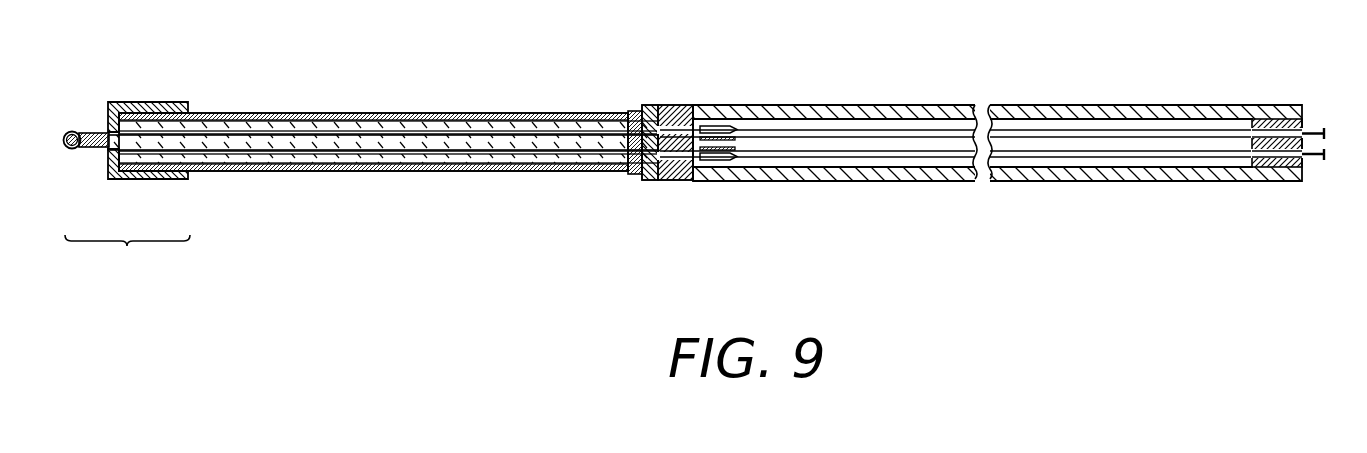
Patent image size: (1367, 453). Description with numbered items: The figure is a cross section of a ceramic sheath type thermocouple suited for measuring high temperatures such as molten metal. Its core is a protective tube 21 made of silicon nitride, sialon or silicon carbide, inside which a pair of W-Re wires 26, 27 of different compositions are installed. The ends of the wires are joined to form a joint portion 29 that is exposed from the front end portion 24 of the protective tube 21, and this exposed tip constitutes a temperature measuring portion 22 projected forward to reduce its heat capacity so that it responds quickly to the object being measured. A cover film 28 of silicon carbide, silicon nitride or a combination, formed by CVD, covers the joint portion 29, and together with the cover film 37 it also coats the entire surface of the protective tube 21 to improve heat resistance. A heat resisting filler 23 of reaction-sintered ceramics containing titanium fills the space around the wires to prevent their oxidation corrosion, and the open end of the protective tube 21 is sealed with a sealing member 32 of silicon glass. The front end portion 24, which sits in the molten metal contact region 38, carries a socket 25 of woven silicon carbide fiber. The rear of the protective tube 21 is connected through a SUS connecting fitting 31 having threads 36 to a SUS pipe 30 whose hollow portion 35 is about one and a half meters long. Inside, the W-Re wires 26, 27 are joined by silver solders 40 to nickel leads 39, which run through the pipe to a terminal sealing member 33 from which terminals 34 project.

The protective tube 21 is at (361, 116).
The temperature measuring portion 22 is at (96, 120).
The heat resisting filler 23 is at (410, 136).
The front end portion 24 is at (157, 180).
The socket 25 is at (157, 104).
The W-Re wire 26 is at (303, 128).
The W-Re wire 27 is at (311, 160).
The cover film 28 is at (74, 150).
The joint portion 29 is at (77, 131).
The SUS pipe 30 is at (866, 108).
The SUS connecting fitting 31 is at (668, 181).
The sealing member 32 is at (672, 120).
The terminal sealing member 33 is at (1278, 118).
The terminals 34 is at (1318, 130).
The hollow portion 35 is at (1060, 145).
The threads 36 is at (648, 104).
The cover film 37 is at (460, 117).
The molten metal contact region 38 is at (127, 259).
The nickel leads 39 is at (930, 135).
The silver solders 40 is at (720, 130).